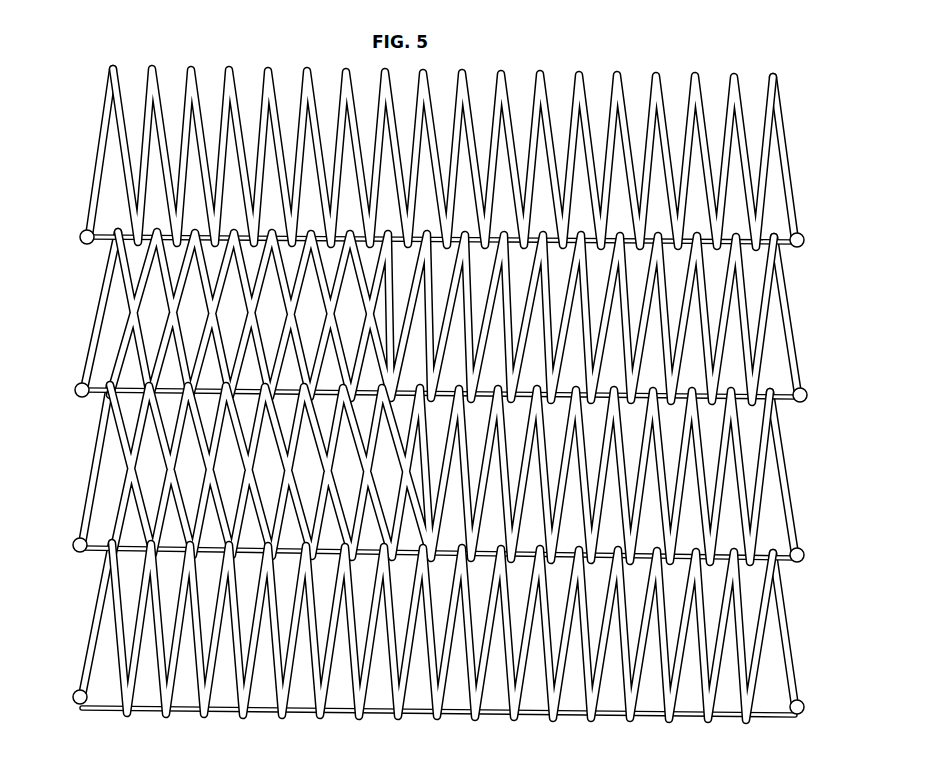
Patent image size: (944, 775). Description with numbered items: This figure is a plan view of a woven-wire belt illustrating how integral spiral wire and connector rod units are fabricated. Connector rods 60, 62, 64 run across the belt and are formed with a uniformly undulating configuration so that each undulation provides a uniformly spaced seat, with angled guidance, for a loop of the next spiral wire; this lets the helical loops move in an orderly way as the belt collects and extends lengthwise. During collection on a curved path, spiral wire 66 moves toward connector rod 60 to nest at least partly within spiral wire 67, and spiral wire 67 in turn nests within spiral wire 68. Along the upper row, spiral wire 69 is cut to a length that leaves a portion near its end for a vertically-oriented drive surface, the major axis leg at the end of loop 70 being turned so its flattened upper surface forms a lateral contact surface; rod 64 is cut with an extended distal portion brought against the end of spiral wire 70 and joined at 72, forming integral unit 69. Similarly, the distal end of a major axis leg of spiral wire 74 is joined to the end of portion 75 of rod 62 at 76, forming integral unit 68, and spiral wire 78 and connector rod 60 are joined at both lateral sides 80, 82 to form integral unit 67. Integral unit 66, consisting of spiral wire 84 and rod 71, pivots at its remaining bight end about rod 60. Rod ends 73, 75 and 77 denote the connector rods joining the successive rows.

The connector rod 60 is at (745, 568).
The connector rod 62 is at (752, 408).
The connector rod 64 is at (752, 252).
The spiral wire 66 is at (797, 666).
The spiral wire 67 is at (795, 494).
The spiral wire 68 is at (796, 347).
The spiral wire 69 is at (797, 172).
The loop 70 is at (100, 147).
The rod 71 is at (88, 712).
The joint 72 is at (82, 232).
The connecting rod 73 is at (806, 240).
The spiral wire 74 is at (95, 296).
The portion of rod 75 is at (810, 395).
The joint 76 is at (76, 389).
The connecting rod 77 is at (88, 562).
The spiral wire 78 is at (98, 498).
The lateral side joint 80 is at (74, 547).
The lateral side joint 82 is at (805, 562).
The spiral wire 84 is at (85, 630).